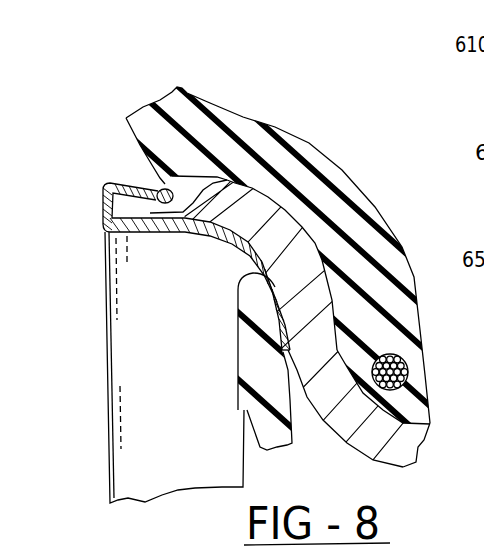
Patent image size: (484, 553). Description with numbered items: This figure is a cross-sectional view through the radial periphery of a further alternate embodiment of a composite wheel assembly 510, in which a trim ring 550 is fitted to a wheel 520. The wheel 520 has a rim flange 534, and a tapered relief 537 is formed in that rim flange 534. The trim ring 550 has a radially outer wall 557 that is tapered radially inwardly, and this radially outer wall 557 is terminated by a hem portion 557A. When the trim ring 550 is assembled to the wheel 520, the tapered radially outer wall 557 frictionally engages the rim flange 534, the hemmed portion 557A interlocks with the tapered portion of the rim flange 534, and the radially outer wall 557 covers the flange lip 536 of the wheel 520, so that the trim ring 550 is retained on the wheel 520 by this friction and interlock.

The composite wheel assembly 510 is at (97, 50).
The wheel 520 is at (367, 430).
The rim flange 534 is at (310, 273).
The flange lip 536 is at (230, 180).
The tapered relief 537 is at (162, 180).
The trim ring 550 is at (143, 319).
The radially outer wall 557 is at (120, 181).
The hem portion 557A is at (163, 196).